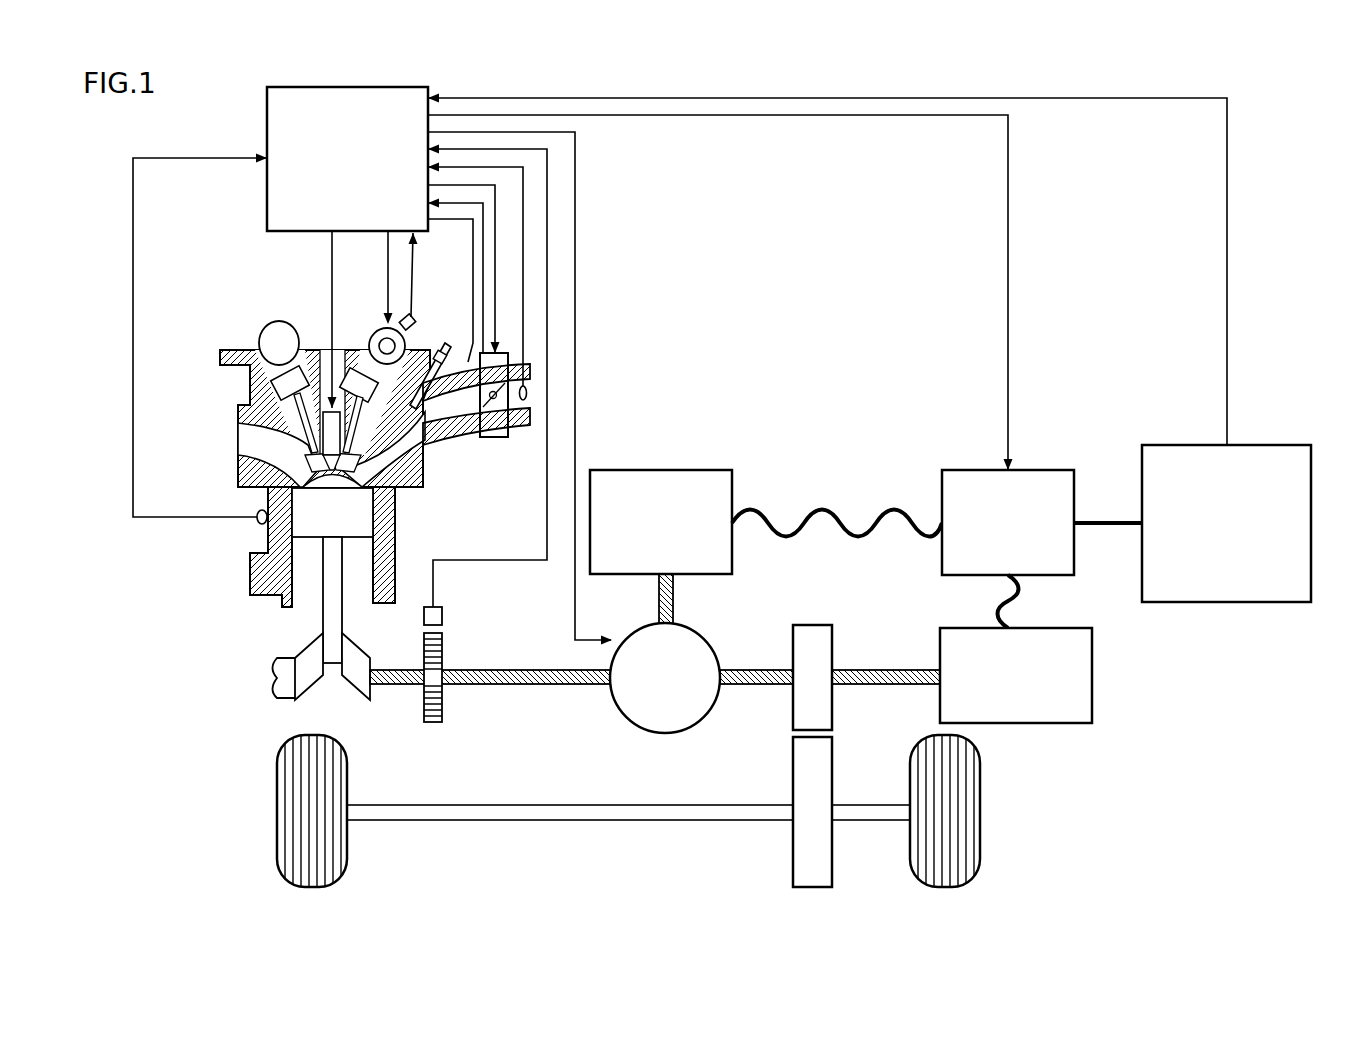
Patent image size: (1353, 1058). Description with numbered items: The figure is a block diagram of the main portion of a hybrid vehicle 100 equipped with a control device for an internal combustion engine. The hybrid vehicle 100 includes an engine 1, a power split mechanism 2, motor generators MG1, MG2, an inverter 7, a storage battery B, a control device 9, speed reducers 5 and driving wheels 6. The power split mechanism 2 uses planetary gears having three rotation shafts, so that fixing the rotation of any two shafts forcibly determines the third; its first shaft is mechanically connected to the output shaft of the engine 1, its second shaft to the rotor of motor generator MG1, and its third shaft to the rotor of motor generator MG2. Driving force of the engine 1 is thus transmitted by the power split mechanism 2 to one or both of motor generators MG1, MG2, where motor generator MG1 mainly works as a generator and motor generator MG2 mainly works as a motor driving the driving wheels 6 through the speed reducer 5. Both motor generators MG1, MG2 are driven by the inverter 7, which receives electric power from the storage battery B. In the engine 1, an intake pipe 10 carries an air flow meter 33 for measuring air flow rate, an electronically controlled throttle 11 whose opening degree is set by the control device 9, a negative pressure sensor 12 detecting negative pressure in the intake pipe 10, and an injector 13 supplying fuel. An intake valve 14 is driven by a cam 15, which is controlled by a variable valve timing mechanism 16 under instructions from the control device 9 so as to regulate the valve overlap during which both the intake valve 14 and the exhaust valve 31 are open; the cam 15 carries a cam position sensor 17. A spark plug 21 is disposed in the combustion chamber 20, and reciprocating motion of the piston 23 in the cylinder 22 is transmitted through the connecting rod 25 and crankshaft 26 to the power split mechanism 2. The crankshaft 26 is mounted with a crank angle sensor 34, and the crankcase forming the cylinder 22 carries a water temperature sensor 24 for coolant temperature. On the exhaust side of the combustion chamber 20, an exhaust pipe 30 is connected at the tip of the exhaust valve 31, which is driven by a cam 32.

The hybrid vehicle 100 is at (1268, 113).
The engine 1 is at (230, 574).
The power split mechanism 2 is at (703, 641).
The speed reducer 5 is at (829, 625).
The driving wheels 6 is at (982, 797).
The inverter 7 is at (1048, 470).
The control device 9 is at (266, 112).
The intake pipe 10 is at (422, 418).
The electronically controlled throttle 11 is at (521, 426).
The negative pressure sensor 12 is at (452, 340).
The injector 13 is at (459, 333).
The intake valve 14 is at (352, 343).
The cam 15 is at (376, 332).
The variable valve timing mechanism 16 is at (383, 320).
The cam position sensor 17 is at (412, 326).
The combustion chamber 20 is at (330, 480).
The spark plug 21 is at (316, 348).
The cylinder 22 is at (250, 583).
The piston 23 is at (348, 520).
The water temperature sensor 24 is at (264, 521).
The connecting rod 25 is at (328, 618).
The crankshaft 26 is at (303, 688).
The exhaust pipe 30 is at (238, 440).
The exhaust valve 31 is at (272, 387).
The cam 32 is at (278, 323).
The air flow meter 33 is at (528, 393).
The crank angle sensor 34 is at (443, 618).
The storage battery B is at (1284, 445).
The motor generator MG1 is at (689, 470).
The motor generator MG2 is at (1046, 628).